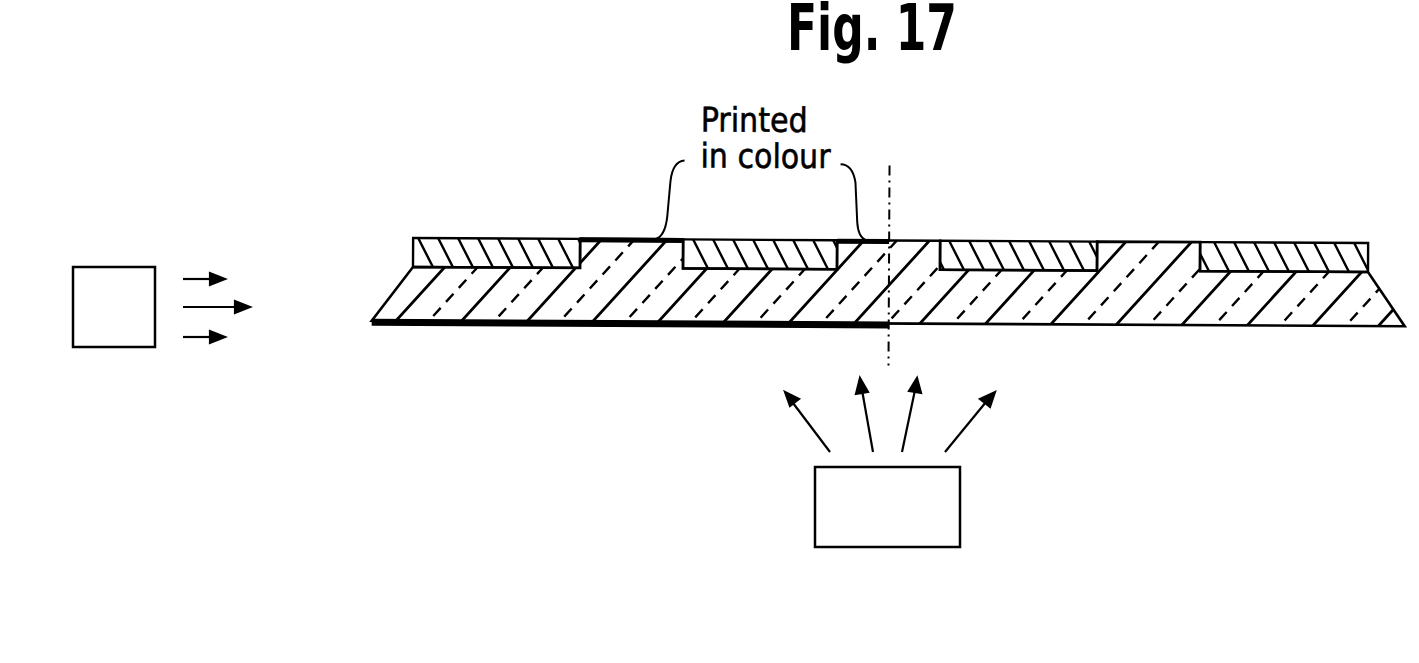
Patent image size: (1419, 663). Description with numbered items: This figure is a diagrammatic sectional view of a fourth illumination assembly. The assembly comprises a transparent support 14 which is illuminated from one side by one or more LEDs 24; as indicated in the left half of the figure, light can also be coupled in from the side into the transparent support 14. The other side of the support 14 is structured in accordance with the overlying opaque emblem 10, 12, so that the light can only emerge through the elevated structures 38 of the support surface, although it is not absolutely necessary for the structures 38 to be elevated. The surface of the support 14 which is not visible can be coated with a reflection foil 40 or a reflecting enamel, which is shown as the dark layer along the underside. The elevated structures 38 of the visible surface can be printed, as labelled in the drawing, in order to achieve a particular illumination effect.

The opaque emblem 10 is at (1277, 248).
The substrate 12 is at (907, 212).
The transparent support 14 is at (1242, 308).
The LED 24 is at (113, 332).
The elevated structures 38 is at (837, 275).
The reflection foil 40 is at (637, 326).